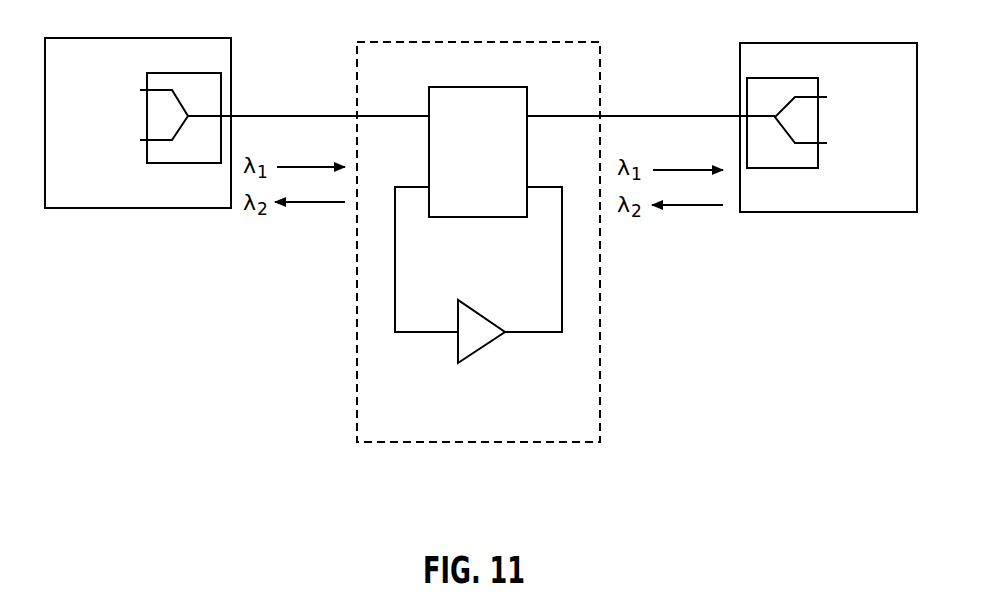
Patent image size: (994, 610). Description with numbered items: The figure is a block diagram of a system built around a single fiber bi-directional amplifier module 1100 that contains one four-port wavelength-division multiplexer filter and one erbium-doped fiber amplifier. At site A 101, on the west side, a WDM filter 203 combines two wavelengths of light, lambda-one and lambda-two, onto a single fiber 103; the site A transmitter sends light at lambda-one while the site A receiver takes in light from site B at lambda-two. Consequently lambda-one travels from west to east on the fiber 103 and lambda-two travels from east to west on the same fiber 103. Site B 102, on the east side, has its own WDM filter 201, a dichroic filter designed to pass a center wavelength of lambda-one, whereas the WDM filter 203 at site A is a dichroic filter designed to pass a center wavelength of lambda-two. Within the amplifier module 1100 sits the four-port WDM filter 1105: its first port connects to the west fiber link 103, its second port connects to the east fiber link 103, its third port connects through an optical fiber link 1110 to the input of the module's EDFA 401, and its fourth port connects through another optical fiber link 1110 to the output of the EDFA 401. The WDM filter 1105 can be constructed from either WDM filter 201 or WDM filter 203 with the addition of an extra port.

The site A 101 is at (138, 129).
The site B 102 is at (828, 135).
The fiber 103 is at (303, 116).
The WDM filter 201 is at (787, 123).
The WDM filter 203 is at (180, 118).
The EDFA 401 is at (487, 343).
The amplifier module 1100 is at (357, 442).
The four-port WDM filter 1105 is at (481, 152).
The optical fiber link 1110 is at (395, 230).